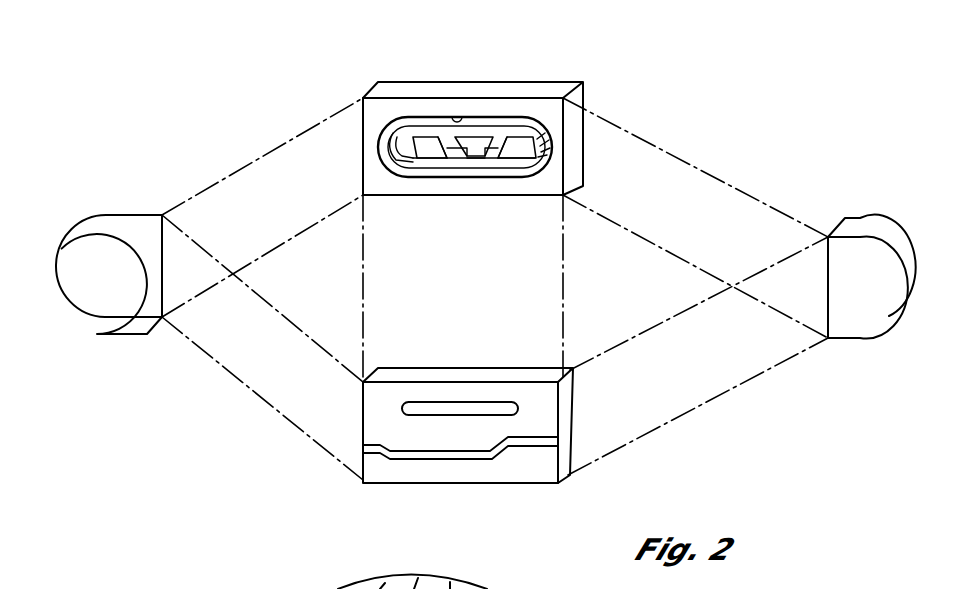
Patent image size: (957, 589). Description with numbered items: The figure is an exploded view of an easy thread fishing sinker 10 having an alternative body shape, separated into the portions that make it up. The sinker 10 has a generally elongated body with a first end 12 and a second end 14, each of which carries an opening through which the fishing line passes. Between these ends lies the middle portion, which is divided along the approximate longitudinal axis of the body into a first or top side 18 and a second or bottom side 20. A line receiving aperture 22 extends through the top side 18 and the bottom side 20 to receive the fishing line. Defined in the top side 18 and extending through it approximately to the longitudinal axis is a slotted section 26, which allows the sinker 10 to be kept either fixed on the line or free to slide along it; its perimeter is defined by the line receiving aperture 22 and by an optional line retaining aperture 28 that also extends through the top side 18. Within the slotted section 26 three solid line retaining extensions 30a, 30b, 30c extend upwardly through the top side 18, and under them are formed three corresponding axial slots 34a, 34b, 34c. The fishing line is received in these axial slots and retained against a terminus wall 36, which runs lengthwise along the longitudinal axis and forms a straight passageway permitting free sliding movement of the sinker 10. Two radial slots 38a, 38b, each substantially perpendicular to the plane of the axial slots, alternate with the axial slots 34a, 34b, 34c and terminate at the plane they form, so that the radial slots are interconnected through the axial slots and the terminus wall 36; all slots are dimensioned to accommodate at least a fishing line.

The easy thread fishing sinker 10 is at (690, 131).
The first end 12 is at (118, 225).
The second end 14 is at (862, 325).
The first or top side 18 is at (557, 92).
The second or bottom side 20 is at (528, 485).
The line receiving aperture 22 is at (398, 459).
The slotted section 26 is at (455, 120).
The line retaining aperture 28 is at (483, 408).
The solid line retaining extension 30a is at (423, 158).
The solid line retaining extension 30b is at (494, 128).
The solid line retaining extension 30c is at (527, 162).
The axial slot 34a is at (420, 133).
The axial slot 34b is at (480, 170).
The axial slot 34c is at (530, 135).
The terminus wall 36 is at (453, 158).
The radial slot 38a is at (447, 132).
The radial slot 38b is at (513, 126).